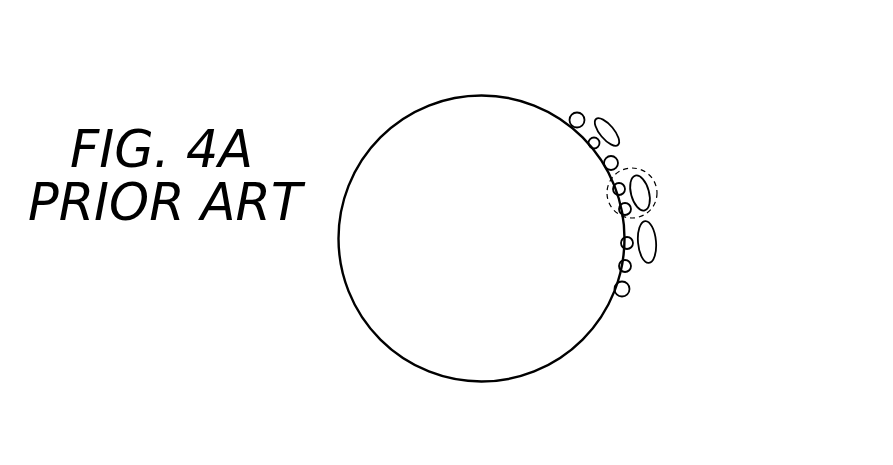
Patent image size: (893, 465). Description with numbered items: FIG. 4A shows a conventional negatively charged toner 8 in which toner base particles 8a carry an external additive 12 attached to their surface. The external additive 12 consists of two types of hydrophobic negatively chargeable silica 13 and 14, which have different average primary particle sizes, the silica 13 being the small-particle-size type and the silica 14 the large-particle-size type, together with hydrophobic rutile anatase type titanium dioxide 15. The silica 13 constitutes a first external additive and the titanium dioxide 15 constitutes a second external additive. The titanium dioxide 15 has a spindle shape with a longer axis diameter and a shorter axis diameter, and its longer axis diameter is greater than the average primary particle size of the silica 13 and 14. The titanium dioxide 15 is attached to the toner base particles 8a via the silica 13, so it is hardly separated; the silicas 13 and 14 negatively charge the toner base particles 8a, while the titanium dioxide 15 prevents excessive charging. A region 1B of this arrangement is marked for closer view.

The negatively charged toner 8 is at (397, 86).
The toner base particles 8a is at (493, 257).
The external additive 12 is at (708, 140).
The unit portion 1B is at (678, 176).
The hydrophobic negatively chargeable silica 13 is at (589, 146).
The hydrophobic negatively chargeable silica 14 is at (576, 112).
The hydrophobic rutile anatase type titanium dioxide 15 is at (618, 121).